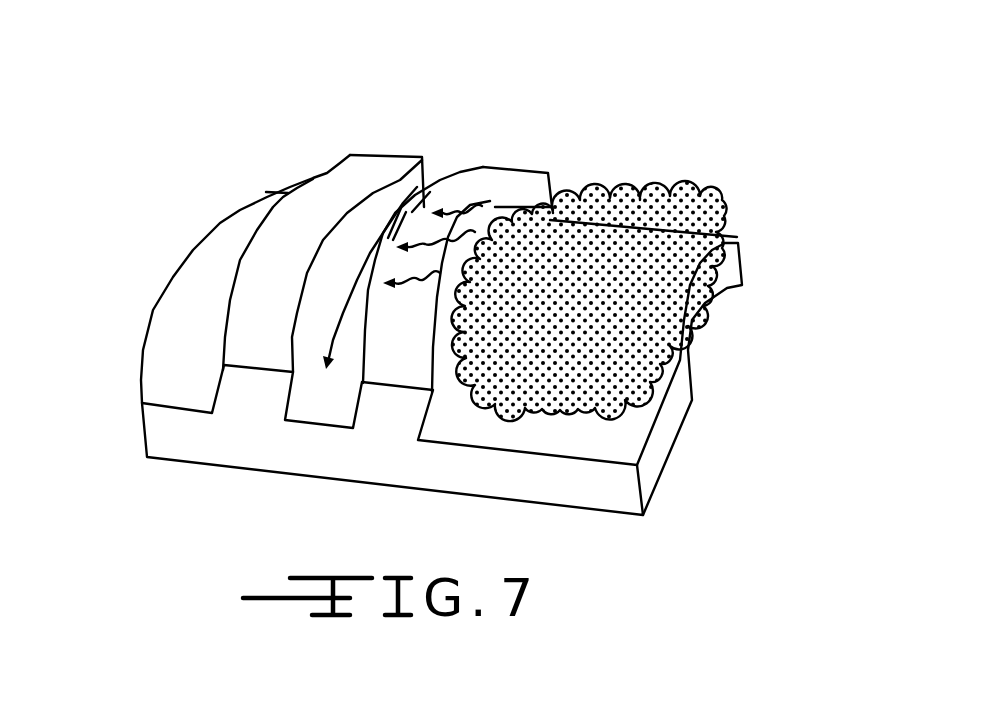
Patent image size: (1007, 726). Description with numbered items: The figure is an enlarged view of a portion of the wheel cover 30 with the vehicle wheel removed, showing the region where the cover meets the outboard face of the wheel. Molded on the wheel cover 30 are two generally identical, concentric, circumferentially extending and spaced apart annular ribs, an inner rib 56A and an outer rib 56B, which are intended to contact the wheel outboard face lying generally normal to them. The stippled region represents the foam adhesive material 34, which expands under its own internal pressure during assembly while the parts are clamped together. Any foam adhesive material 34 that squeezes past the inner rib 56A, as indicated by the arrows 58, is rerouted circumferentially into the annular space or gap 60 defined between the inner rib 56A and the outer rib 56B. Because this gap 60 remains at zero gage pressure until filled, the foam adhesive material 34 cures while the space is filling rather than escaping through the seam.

The wheel cover 30 is at (705, 479).
The foam adhesive material 34 is at (690, 207).
The inner rib 56A is at (507, 182).
The outer rib 56B is at (376, 167).
The arrows 58 is at (423, 181).
The annular space or gap 60 is at (471, 201).